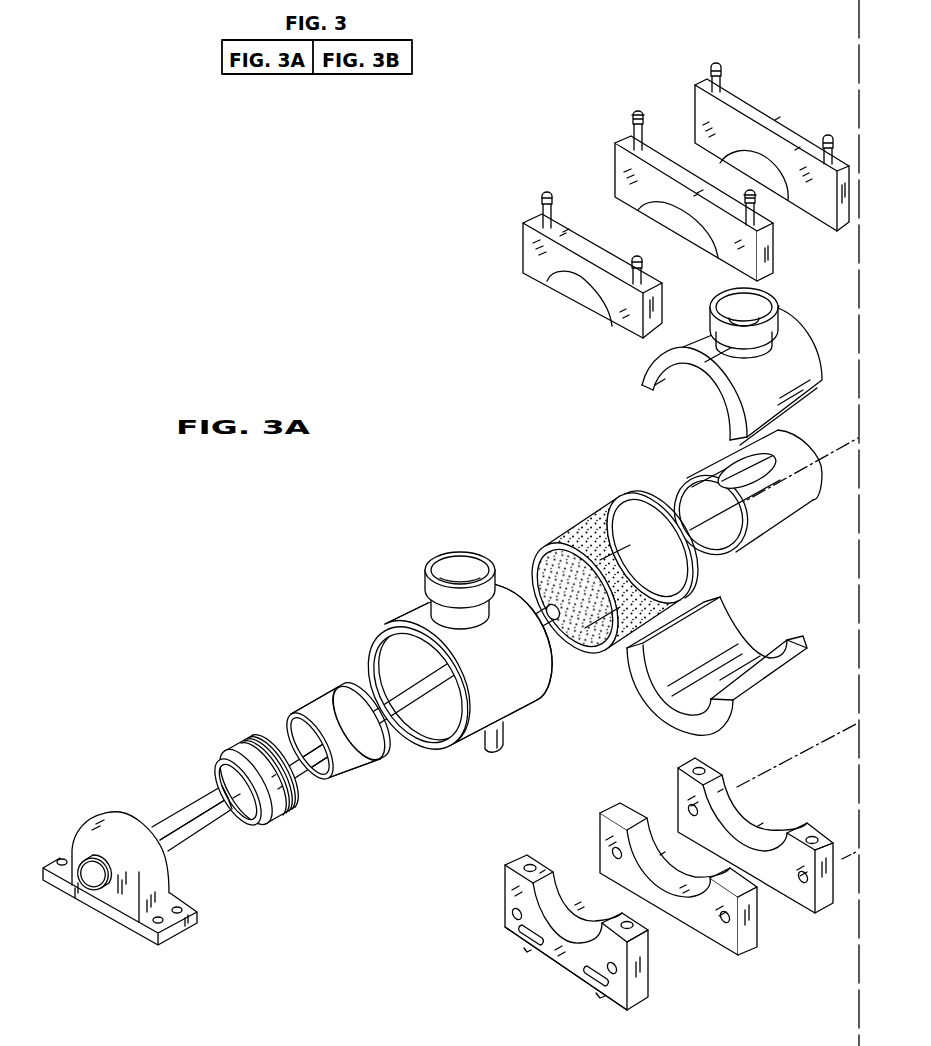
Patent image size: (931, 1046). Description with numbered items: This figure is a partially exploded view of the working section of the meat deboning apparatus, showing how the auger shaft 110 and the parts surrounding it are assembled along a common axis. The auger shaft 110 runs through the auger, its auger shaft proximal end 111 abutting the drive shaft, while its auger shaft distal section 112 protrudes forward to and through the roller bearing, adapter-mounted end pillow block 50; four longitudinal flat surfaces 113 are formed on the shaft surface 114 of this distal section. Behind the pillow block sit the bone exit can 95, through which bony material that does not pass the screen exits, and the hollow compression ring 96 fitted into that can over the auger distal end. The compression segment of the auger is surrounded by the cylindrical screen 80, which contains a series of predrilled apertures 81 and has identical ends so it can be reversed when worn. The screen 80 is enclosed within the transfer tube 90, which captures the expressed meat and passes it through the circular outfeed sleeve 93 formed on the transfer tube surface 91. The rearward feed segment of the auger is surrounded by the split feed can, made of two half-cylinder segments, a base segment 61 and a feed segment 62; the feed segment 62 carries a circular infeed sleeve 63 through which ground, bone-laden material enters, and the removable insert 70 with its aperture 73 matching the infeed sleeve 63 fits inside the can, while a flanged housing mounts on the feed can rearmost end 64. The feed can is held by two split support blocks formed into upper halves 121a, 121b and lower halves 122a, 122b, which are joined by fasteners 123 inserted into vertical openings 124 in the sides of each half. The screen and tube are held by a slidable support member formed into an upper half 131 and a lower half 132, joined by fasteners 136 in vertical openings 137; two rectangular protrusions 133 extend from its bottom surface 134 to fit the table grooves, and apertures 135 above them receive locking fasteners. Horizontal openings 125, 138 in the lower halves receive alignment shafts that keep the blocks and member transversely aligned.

The end pillow block 50 is at (100, 829).
The base segment 61 is at (778, 683).
The feed segment 62 is at (795, 345).
The infeed sleeve 63 is at (777, 310).
The feed can rearmost end 64 is at (800, 640).
The removable insert 70 is at (777, 527).
The aperture 73 is at (729, 469).
The cylindrical screen 80 is at (555, 546).
The predrilled apertures 81 is at (617, 521).
The transfer tube 90 is at (393, 622).
The transfer tube surface 91 is at (508, 674).
The outfeed sleeve 93 is at (448, 561).
The bone exit can 95 is at (323, 703).
The hollow compression ring 96 is at (285, 802).
The auger shaft 110 is at (177, 813).
The auger shaft proximal end 111 is at (535, 611).
The auger shaft distal section 112 is at (90, 885).
The longitudinal flat surfaces 113 is at (201, 806).
The shaft surface 114 is at (235, 806).
The upper half of forward support block 121a is at (616, 148).
The upper half of rearward support block 121b is at (847, 242).
The lower half of forward support block 122a is at (752, 936).
The lower half of rearward support block 122b is at (830, 897).
The fasteners 123 is at (637, 112).
The vertical openings 124 is at (719, 69).
The horizontal opening 125 is at (621, 853).
The upper half of support member 131 is at (524, 250).
The lower half of support member 132 is at (505, 876).
The rectangular protrusions 133 is at (524, 951).
The bottom surface 134 is at (552, 966).
The apertures 135 is at (519, 931).
The fasteners 136 is at (546, 193).
The vertical openings 137 is at (545, 223).
The horizontal opening 138 is at (514, 914).